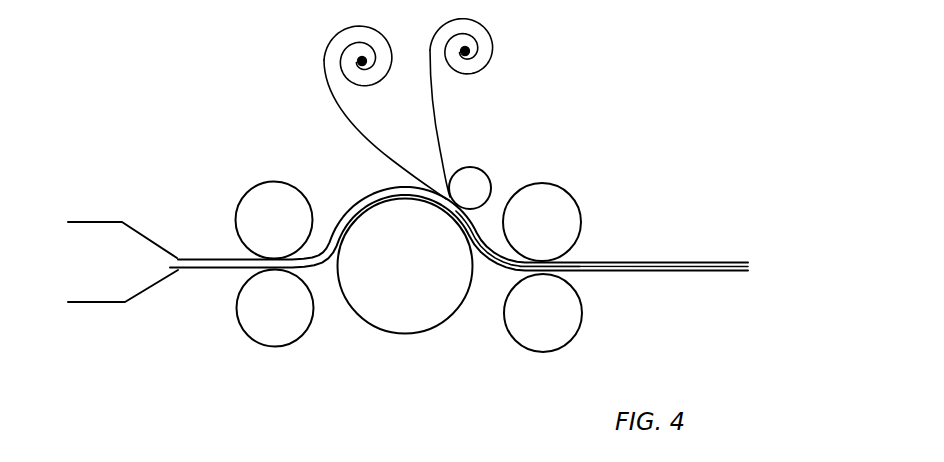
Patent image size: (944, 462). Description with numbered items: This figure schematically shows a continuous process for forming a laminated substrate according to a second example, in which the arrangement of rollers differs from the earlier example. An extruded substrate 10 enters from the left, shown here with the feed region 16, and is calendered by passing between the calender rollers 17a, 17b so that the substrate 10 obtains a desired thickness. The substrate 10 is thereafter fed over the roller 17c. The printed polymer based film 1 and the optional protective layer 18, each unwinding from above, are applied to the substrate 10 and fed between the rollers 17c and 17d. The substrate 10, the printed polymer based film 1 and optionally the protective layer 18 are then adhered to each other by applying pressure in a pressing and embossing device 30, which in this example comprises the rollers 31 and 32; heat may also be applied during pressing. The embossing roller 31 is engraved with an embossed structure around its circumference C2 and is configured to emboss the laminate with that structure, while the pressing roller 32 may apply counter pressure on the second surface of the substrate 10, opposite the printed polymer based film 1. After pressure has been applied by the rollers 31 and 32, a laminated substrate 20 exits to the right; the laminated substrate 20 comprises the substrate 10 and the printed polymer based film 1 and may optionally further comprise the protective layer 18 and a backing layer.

The printed polymer based film 1 is at (337, 108).
The protective layer 18 is at (439, 126).
The substrate 10 is at (228, 272).
The headbox / web feed 16 is at (110, 302).
The calender roller 17a is at (290, 342).
The calender roller 17b is at (240, 202).
The roller 17c is at (440, 325).
The roller 17d is at (487, 178).
The pressing and embossing device 30 is at (588, 232).
The embossing roller 31 is at (583, 203).
The pressing roller 32 is at (582, 318).
The circumference C2 is at (597, 242).
The laminated substrate 20 is at (705, 277).